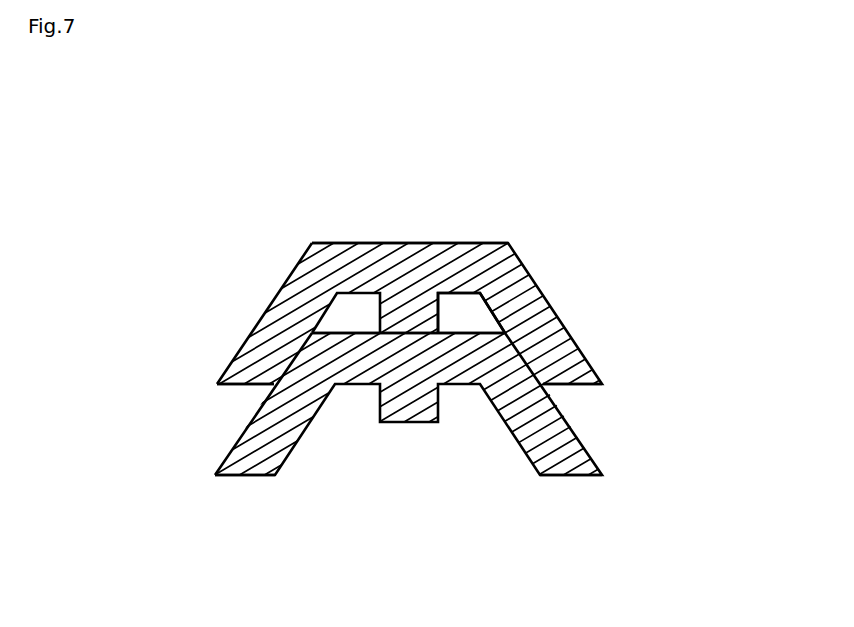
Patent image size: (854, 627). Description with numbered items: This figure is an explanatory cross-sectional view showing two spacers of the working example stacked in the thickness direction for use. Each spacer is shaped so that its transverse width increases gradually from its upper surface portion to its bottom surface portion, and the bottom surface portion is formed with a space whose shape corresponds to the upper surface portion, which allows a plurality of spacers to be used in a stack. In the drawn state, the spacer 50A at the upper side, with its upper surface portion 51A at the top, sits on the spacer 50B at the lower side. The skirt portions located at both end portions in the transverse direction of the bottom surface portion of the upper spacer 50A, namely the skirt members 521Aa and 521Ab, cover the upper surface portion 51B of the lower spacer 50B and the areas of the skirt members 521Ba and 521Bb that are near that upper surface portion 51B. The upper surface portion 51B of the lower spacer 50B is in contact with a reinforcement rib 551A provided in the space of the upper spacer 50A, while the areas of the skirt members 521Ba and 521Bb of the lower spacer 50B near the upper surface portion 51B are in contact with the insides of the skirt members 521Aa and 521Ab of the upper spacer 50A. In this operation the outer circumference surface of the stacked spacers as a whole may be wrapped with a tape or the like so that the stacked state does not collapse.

The spacer at the upper side 50A is at (520, 223).
The spacer at the lower side 50B is at (622, 468).
The upper surface portion of the upper spacer 51A is at (393, 242).
The upper surface portion of the lower spacer 51B is at (350, 333).
The reinforcement rib 551A is at (440, 322).
The skirt member of the upper spacer 521Aa is at (245, 387).
The skirt member of the upper spacer 521Ab is at (577, 388).
The skirt member of the lower spacer 521Ba is at (250, 477).
The skirt member of the lower spacer 521Bb is at (567, 478).